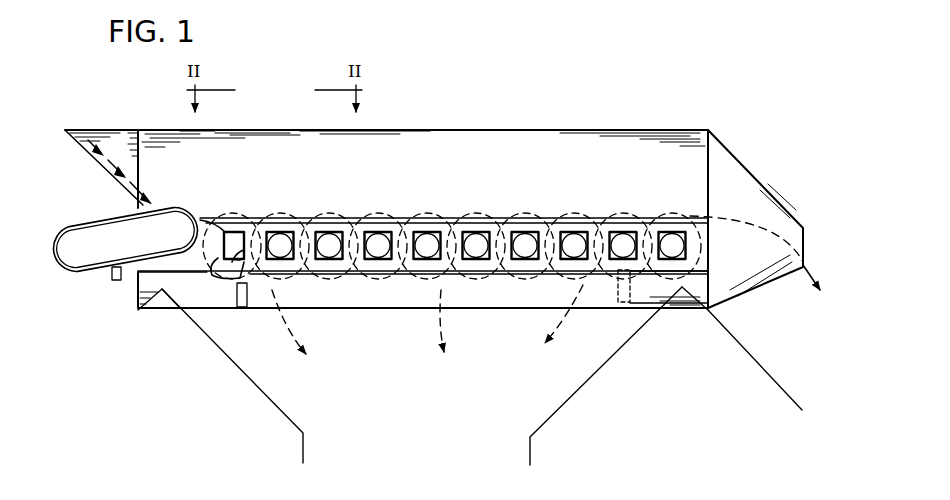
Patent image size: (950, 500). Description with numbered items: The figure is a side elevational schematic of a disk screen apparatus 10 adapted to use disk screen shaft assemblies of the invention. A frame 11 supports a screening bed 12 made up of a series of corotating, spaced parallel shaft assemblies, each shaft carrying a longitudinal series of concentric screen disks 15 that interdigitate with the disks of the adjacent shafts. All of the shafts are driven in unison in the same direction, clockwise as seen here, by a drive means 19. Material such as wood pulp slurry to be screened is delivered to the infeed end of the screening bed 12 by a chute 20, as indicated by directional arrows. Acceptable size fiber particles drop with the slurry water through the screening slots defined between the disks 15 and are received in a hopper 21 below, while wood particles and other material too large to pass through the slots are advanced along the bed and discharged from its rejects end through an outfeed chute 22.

The disk screen apparatus 10 is at (583, 112).
The frame 11 is at (137, 298).
The screening bed 12 is at (500, 213).
The screen disks 15 is at (363, 213).
The drive means 19 is at (76, 262).
The chute 20 is at (118, 183).
The hopper 21 is at (257, 388).
The outfeed chute 22 is at (745, 348).